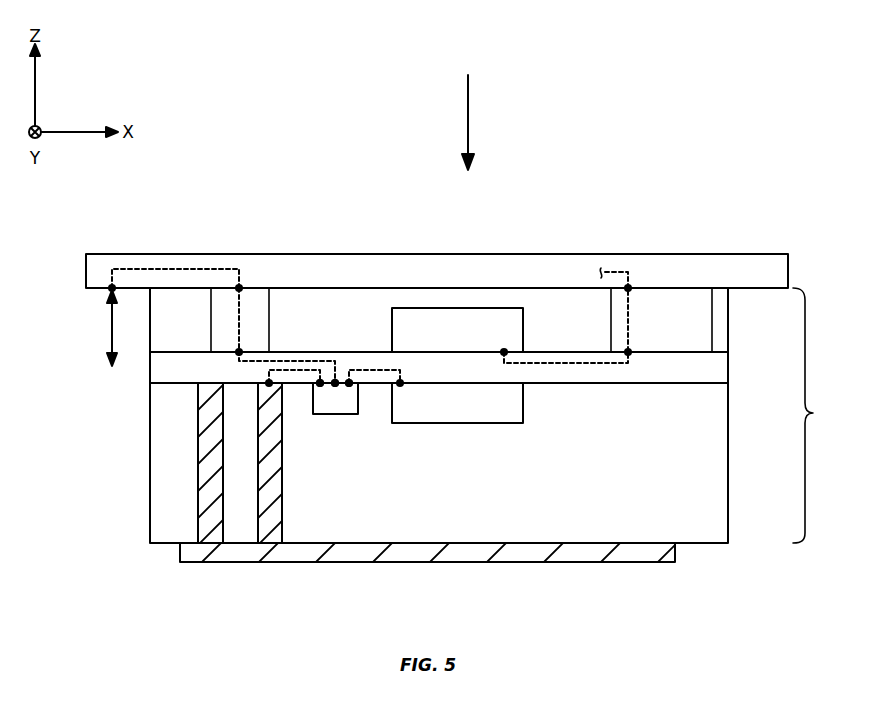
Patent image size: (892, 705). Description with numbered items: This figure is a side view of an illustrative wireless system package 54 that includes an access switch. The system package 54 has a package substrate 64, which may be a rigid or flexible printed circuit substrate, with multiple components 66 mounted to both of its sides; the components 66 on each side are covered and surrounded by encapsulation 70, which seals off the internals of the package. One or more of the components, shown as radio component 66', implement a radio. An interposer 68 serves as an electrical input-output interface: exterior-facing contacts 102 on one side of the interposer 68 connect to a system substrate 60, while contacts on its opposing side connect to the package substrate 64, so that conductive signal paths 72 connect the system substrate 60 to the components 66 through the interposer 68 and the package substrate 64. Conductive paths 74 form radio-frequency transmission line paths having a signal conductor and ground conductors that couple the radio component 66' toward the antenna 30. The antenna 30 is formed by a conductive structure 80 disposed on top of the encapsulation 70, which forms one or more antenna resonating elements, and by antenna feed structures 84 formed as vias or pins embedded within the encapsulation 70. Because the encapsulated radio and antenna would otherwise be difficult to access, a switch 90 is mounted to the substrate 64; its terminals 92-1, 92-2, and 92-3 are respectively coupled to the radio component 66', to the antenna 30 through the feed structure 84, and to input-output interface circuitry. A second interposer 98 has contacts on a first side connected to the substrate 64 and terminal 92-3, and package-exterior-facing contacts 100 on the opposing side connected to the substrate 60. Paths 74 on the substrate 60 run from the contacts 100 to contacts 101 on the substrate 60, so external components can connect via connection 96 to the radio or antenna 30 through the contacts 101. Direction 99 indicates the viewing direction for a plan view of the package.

The antenna 30 is at (700, 573).
The system package 54 is at (818, 415).
The system substrate 60 is at (782, 272).
The package substrate 64 is at (722, 365).
The components 66 is at (489, 330).
The radio component 66' is at (491, 403).
The interposer 68 is at (712, 318).
The encapsulation 70 is at (150, 335).
The conductive signal paths 72 is at (630, 317).
The conductive paths 74 is at (176, 268).
The conductive structure 80 is at (408, 563).
The antenna feed structure 84 is at (203, 498).
The switch 90 is at (345, 407).
The switch terminal 92-1 is at (352, 388).
The switch terminal 92-2 is at (318, 388).
The switch terminal 92-3 is at (335, 388).
The connection 96 is at (112, 325).
The interposer 98 is at (263, 318).
The viewing direction 99 is at (469, 115).
The package-exterior-facing contacts 100 is at (240, 287).
The contacts 101 is at (111, 287).
The contacts 102 is at (629, 287).